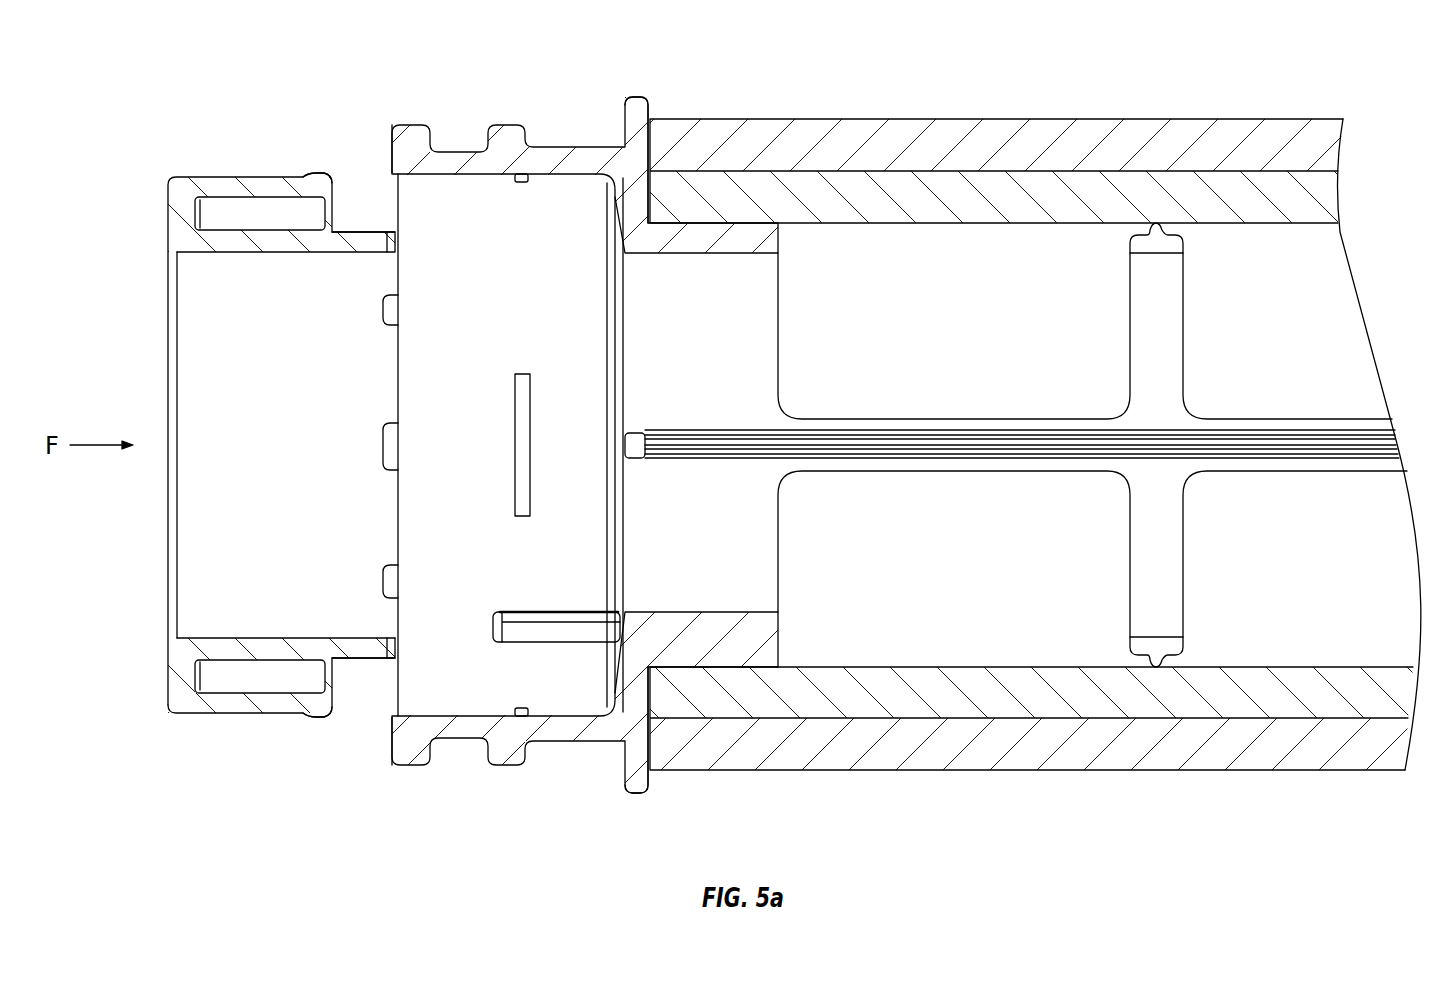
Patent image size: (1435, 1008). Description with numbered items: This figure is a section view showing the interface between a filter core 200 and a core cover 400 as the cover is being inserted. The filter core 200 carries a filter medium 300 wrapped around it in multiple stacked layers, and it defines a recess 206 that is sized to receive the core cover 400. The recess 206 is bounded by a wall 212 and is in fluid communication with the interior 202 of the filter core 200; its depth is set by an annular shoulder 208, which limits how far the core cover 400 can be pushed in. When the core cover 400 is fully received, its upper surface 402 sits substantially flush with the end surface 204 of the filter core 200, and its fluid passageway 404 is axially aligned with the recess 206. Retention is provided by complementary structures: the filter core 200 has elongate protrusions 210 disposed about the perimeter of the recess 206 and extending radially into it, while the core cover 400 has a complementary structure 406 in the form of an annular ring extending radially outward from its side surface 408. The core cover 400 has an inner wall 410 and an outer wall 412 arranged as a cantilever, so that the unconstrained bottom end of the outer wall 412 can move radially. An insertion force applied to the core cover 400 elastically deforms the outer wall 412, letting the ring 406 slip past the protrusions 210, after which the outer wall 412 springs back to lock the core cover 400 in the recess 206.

The filter core 200 is at (662, 84).
The interior 202 is at (973, 327).
The end surface 204 is at (390, 138).
The recess 206 is at (543, 310).
The annular shoulder 208 is at (625, 197).
The complementary structure 210 is at (523, 183).
The wall 212 is at (468, 180).
The filter medium 300 is at (1062, 205).
The core cover 400 is at (148, 271).
The upper surface 402 is at (168, 220).
The fluid passageway 404 is at (298, 448).
The complementary structure 406 is at (317, 173).
The side surface 408 is at (204, 175).
The inner wall 410 is at (291, 243).
The outer wall 412 is at (190, 187).